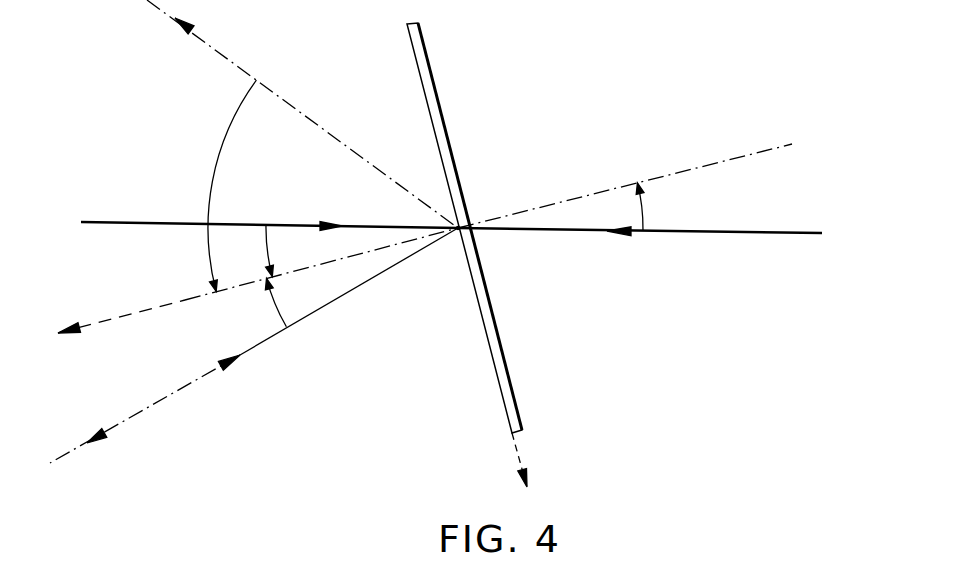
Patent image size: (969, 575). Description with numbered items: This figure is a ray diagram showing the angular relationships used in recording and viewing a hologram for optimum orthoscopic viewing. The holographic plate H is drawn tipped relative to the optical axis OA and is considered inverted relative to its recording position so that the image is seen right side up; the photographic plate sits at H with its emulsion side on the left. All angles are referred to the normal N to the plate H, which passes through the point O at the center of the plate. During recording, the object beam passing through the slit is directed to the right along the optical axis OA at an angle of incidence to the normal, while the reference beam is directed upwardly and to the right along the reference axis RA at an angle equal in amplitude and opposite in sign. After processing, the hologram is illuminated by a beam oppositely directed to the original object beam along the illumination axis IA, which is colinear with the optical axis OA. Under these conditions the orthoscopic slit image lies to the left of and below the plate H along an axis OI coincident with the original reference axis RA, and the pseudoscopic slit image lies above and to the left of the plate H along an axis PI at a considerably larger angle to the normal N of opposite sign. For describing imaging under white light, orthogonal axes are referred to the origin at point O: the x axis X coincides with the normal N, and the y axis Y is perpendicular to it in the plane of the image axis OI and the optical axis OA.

The holographic plate H is at (424, 47).
The normal to the plate N is at (749, 154).
The illumination axis IA is at (640, 222).
The optical axis OA is at (296, 224).
The origin point O is at (456, 232).
The pseudoscopic image axis PI is at (245, 71).
The x axis X is at (125, 316).
The reference axis RA is at (201, 376).
The orthoscopic image axis OI is at (126, 419).
The y axis Y is at (518, 457).